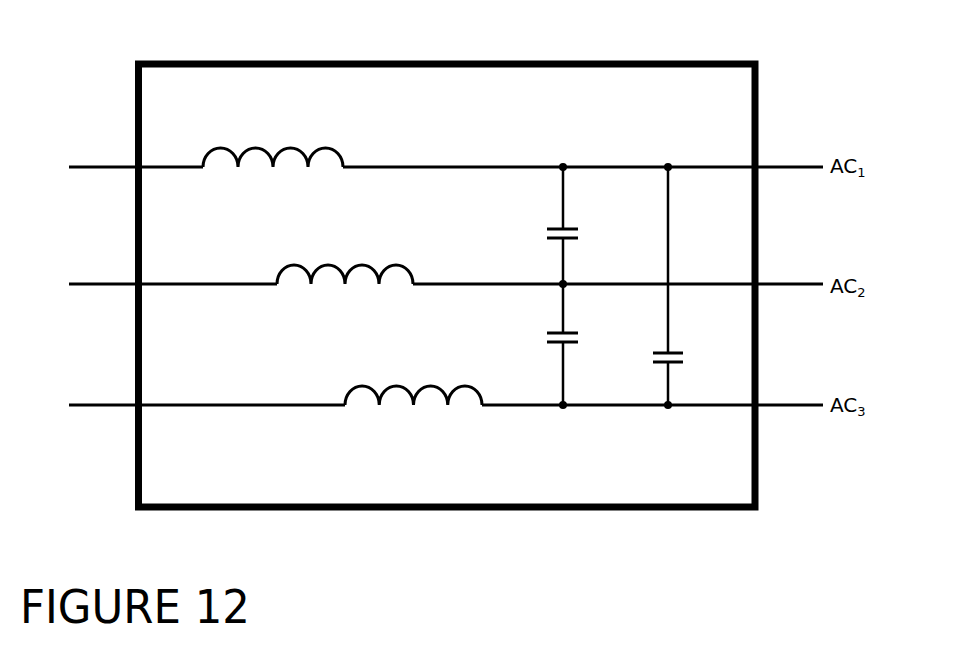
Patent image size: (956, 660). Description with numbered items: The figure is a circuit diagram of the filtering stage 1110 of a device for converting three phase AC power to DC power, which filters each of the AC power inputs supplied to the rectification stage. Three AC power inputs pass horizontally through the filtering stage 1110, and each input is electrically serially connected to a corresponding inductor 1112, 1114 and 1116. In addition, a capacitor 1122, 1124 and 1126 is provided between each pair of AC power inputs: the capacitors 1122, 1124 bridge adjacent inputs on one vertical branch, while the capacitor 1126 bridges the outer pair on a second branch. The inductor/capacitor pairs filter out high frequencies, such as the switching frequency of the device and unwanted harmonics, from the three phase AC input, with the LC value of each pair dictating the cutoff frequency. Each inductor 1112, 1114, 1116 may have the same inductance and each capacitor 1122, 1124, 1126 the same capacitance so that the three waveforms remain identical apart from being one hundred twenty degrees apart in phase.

The filtering stage 1110 is at (148, 58).
The inductor 1112 is at (203, 153).
The inductor 1114 is at (278, 267).
The inductor 1116 is at (345, 387).
The capacitor 1122 is at (546, 232).
The capacitor 1124 is at (546, 337).
The capacitor 1126 is at (653, 356).